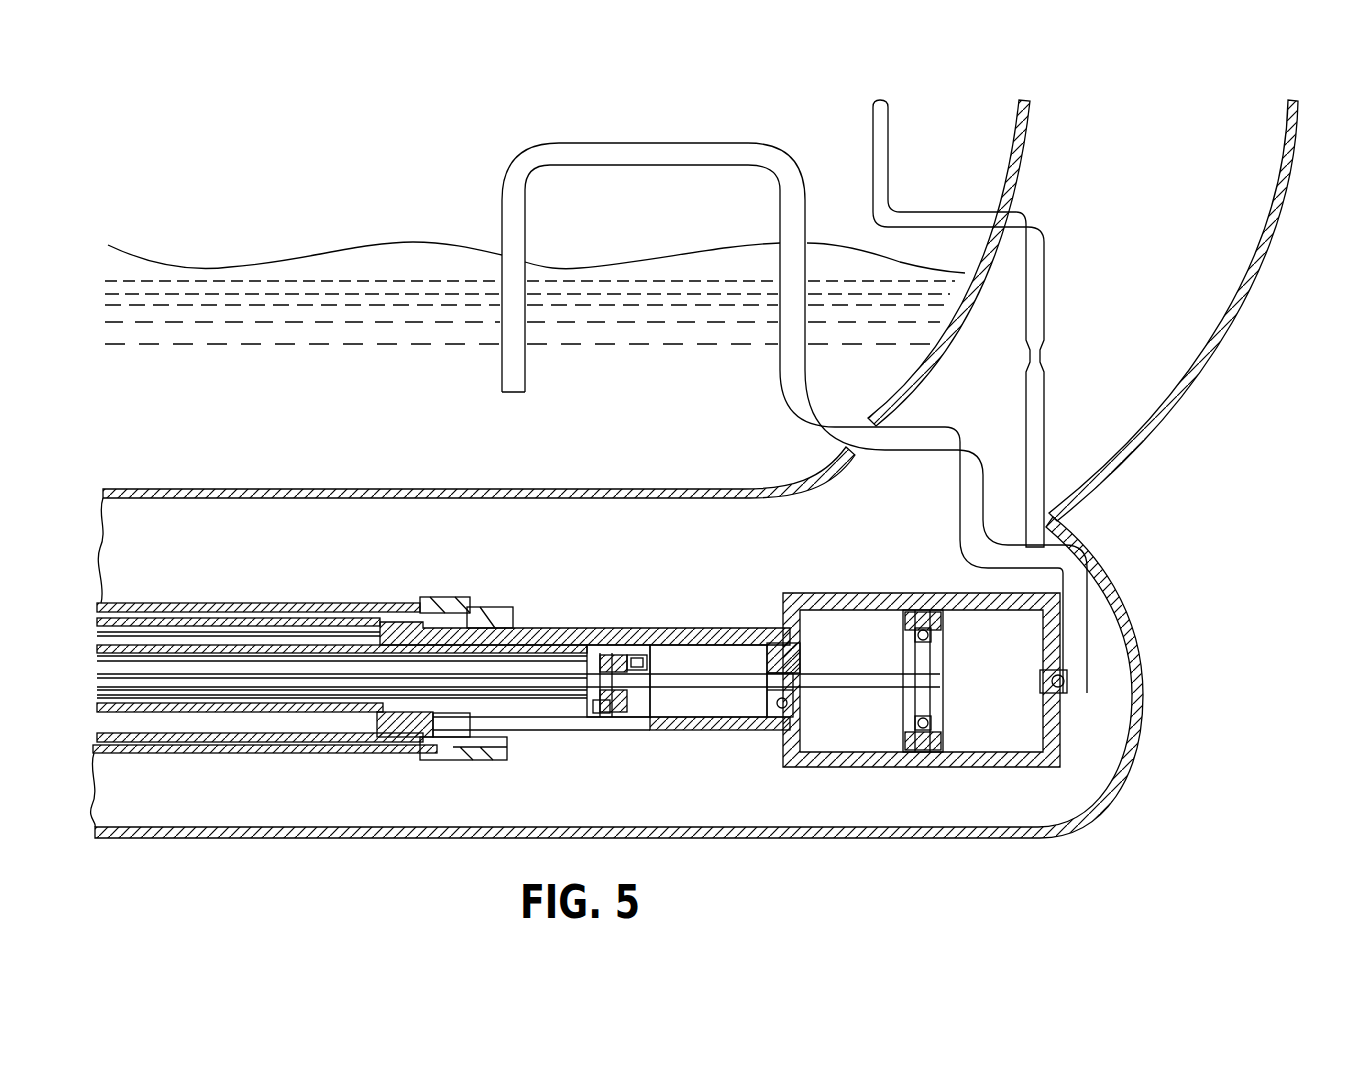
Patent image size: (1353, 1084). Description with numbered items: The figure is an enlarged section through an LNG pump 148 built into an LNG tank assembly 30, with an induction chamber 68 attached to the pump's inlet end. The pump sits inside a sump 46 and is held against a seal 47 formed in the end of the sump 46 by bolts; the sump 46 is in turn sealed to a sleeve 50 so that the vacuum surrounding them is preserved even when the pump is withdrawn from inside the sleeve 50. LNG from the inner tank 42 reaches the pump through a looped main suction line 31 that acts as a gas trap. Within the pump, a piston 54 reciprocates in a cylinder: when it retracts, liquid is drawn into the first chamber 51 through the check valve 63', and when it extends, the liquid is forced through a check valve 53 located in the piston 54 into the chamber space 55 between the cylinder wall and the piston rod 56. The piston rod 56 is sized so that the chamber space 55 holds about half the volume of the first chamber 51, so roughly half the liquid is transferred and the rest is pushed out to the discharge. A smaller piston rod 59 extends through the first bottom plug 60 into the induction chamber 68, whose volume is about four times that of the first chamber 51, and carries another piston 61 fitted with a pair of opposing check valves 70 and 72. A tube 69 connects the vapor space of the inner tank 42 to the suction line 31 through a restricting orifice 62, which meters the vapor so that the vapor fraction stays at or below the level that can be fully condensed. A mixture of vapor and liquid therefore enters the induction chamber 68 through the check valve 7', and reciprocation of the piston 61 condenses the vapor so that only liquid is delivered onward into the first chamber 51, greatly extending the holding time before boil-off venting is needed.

The pump 148 is at (403, 542).
The inner tank 42 is at (1020, 150).
The LNG tank assembly 30 is at (1225, 325).
The suction line 31 is at (907, 430).
The restricting orifice 62 is at (1058, 344).
The tube 69 is at (1050, 410).
The sleeve 50 is at (248, 757).
The chamber space 55 is at (527, 648).
The piston rod 56 is at (545, 695).
The sump 46 is at (563, 630).
The seal 47 is at (452, 738).
The piston 54 is at (627, 700).
The check valve 53 is at (650, 660).
The first chamber 51 is at (733, 657).
The first bottom plug 60 is at (798, 658).
The check valve 63' is at (724, 735).
The induction chamber 68 is at (965, 735).
The piston rod 59 is at (855, 687).
The piston 61 is at (923, 740).
The check valve 70 is at (932, 638).
The check valve 72 is at (935, 727).
The check valve 7' is at (1125, 704).